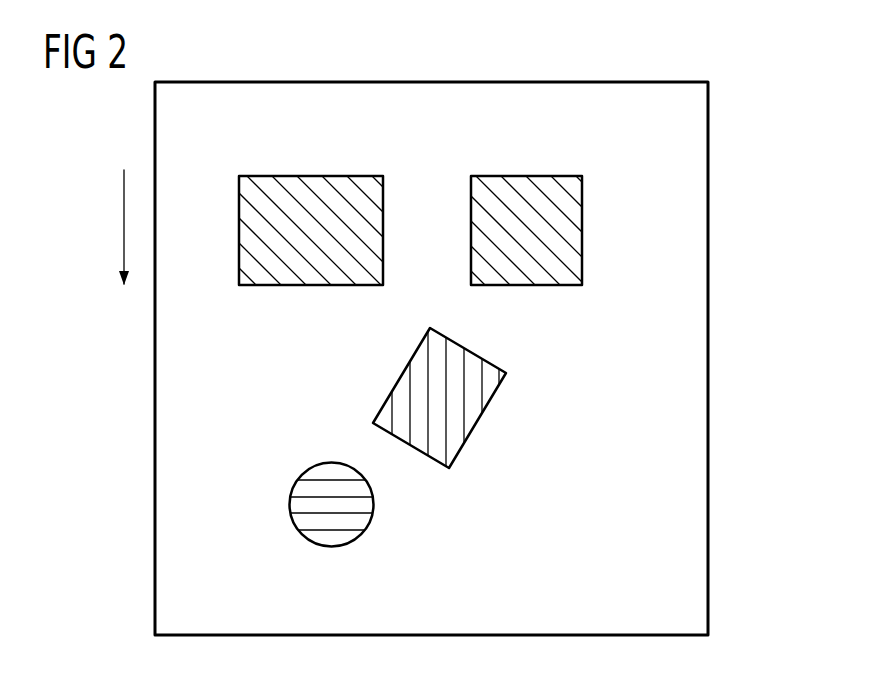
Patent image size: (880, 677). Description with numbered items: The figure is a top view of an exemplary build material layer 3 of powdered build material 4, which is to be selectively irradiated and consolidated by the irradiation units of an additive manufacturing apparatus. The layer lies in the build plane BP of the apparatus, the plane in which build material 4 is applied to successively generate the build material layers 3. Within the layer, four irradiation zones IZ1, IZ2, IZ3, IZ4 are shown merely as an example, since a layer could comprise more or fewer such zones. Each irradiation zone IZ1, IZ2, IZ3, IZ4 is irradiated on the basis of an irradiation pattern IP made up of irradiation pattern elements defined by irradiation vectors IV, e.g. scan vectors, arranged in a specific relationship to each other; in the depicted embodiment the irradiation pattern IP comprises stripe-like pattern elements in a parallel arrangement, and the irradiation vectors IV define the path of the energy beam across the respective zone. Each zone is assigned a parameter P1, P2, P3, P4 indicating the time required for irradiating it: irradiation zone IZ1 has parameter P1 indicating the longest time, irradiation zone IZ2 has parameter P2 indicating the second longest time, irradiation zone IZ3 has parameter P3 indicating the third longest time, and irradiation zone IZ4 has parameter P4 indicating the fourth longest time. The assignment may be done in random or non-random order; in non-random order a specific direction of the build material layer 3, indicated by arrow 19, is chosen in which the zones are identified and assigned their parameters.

The build plane BP is at (486, 358).
The build material layer 3 is at (471, 358).
The build material 4 is at (698, 523).
The arrow 19 is at (124, 215).
The irradiation zone IZ1 is at (311, 187).
The parameter P1 is at (345, 176).
The irradiation zone IZ2 is at (531, 187).
The parameter P2 is at (555, 176).
The irradiation zone IZ3 is at (501, 398).
The parameter P3 is at (495, 400).
The irradiation zone IZ4 is at (273, 495).
The parameter P4 is at (307, 467).
The irradiation vector IV is at (270, 196).
The irradiation pattern IP is at (354, 260).